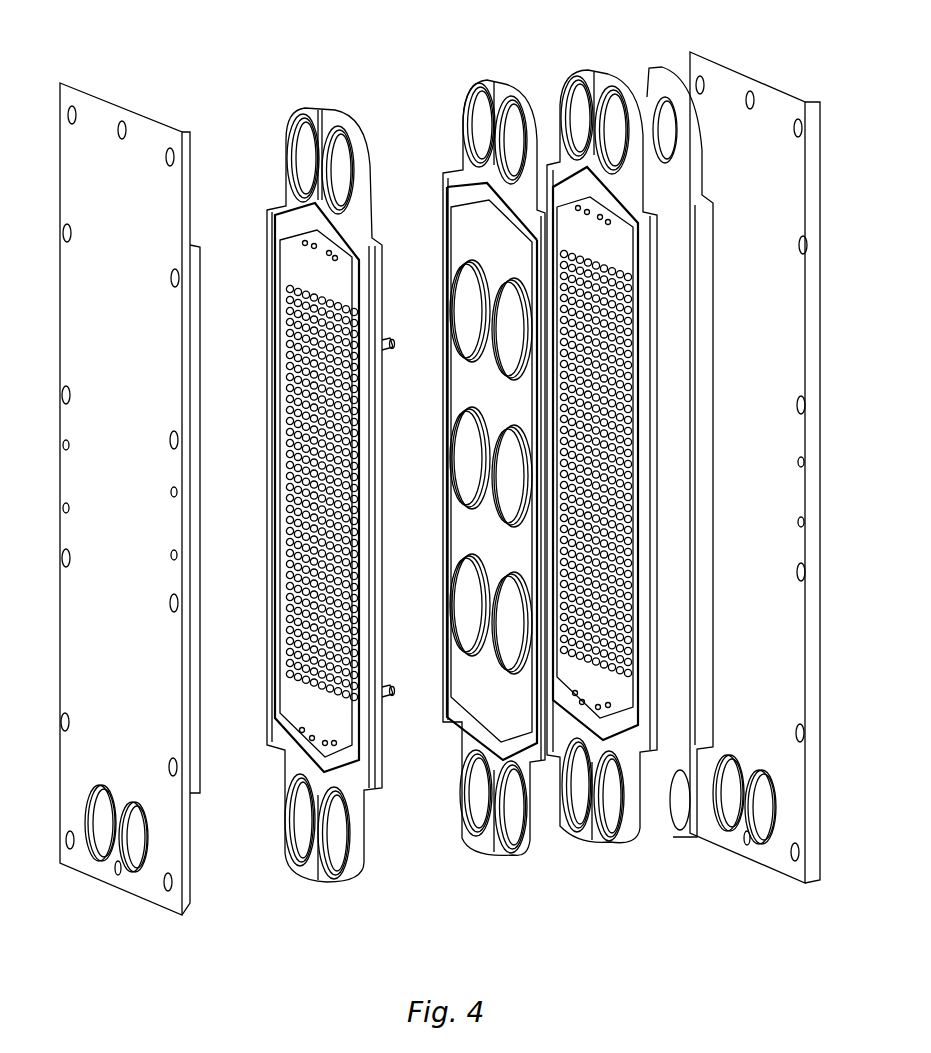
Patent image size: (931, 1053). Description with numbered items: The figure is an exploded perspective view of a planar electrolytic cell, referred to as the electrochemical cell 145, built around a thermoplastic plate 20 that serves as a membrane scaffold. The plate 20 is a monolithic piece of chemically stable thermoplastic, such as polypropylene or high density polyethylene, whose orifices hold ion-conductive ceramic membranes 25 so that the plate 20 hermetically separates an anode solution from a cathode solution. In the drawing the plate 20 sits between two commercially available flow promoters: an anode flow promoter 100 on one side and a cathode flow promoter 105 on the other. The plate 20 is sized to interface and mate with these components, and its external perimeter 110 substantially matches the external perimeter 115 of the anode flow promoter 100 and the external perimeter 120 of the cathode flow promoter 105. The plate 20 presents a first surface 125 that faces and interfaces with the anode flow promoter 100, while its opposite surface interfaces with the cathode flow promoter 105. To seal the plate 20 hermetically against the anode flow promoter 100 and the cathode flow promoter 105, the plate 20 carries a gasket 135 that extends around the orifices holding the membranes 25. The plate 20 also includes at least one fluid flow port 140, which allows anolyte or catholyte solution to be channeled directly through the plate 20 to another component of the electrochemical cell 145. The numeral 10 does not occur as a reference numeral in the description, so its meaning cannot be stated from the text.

The electrochemical cell 145 is at (259, 86).
The anode flow promoter 100 is at (324, 890).
The external perimeter of the anode flow promoter 115 is at (318, 108).
The second heat exchange plate 10 is at (505, 866).
The external perimeter of the thermoplastic plate 110 is at (487, 80).
The fluid flow port 140 is at (480, 793).
The gasket 135 is at (447, 188).
The first surface 125 is at (506, 233).
The thermoplastic plate 20 is at (468, 682).
The ion-conductive ceramic membrane 25 is at (487, 320).
The cathode flow promoter 105 is at (610, 854).
The external perimeter of the cathode flow promoter 120 is at (588, 70).